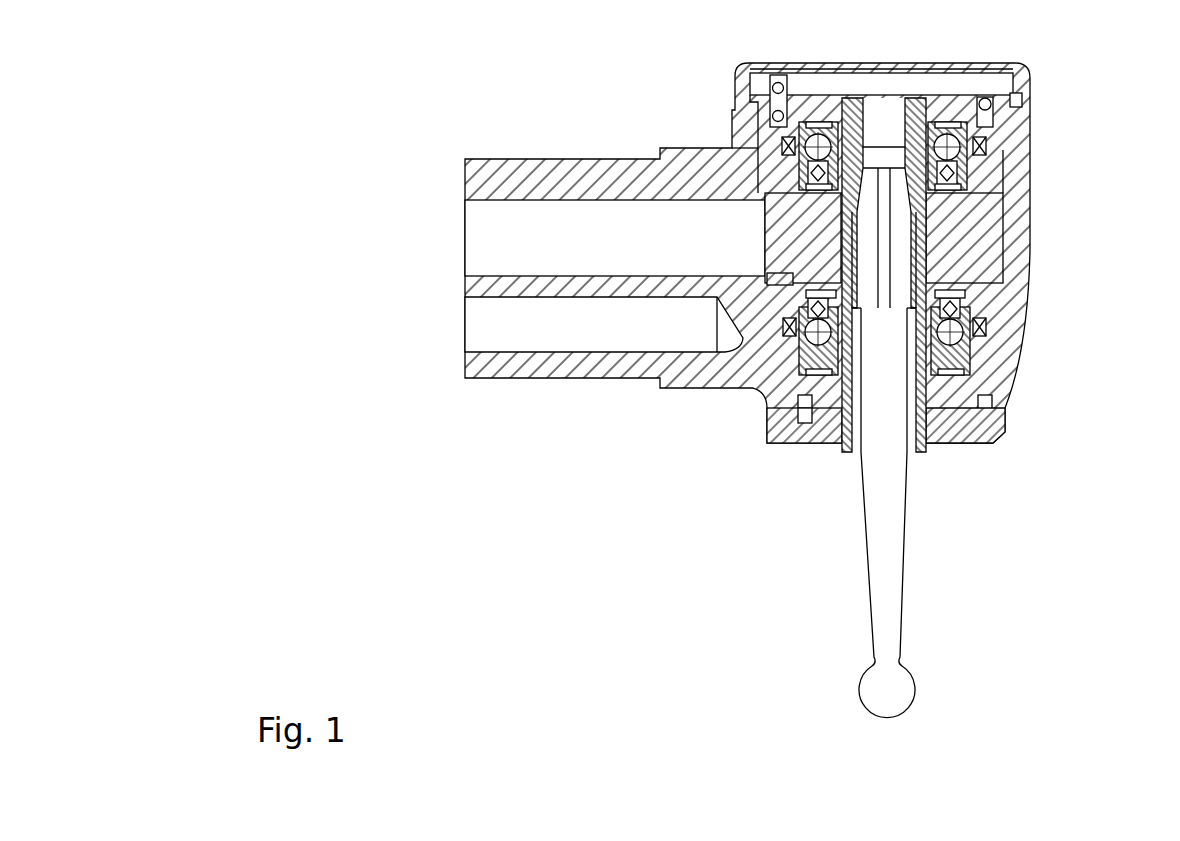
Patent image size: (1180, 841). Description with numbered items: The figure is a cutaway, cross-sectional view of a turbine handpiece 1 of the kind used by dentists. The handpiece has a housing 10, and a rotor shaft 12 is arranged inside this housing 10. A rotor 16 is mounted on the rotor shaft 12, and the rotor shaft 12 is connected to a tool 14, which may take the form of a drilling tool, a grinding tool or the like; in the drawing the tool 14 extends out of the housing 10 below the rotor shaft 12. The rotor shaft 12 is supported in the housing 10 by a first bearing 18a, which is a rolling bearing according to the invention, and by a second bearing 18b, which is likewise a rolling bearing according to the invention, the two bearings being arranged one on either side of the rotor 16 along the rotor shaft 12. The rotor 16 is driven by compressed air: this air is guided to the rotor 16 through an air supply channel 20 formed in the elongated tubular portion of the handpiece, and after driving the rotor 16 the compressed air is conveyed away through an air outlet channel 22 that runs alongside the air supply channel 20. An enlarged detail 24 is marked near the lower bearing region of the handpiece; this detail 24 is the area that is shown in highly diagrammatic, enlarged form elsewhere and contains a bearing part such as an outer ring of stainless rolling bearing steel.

The turbine handpiece 1 is at (366, 93).
The housing 10 is at (1013, 302).
The rotor shaft 12 is at (923, 208).
The tool 14 is at (893, 593).
The rotor 16 is at (968, 252).
The first bearing 18a is at (967, 343).
The second bearing 18b is at (963, 128).
The air supply channel 20 is at (562, 243).
The air outlet channel 22 is at (551, 330).
The enlarged detail 24 is at (768, 427).